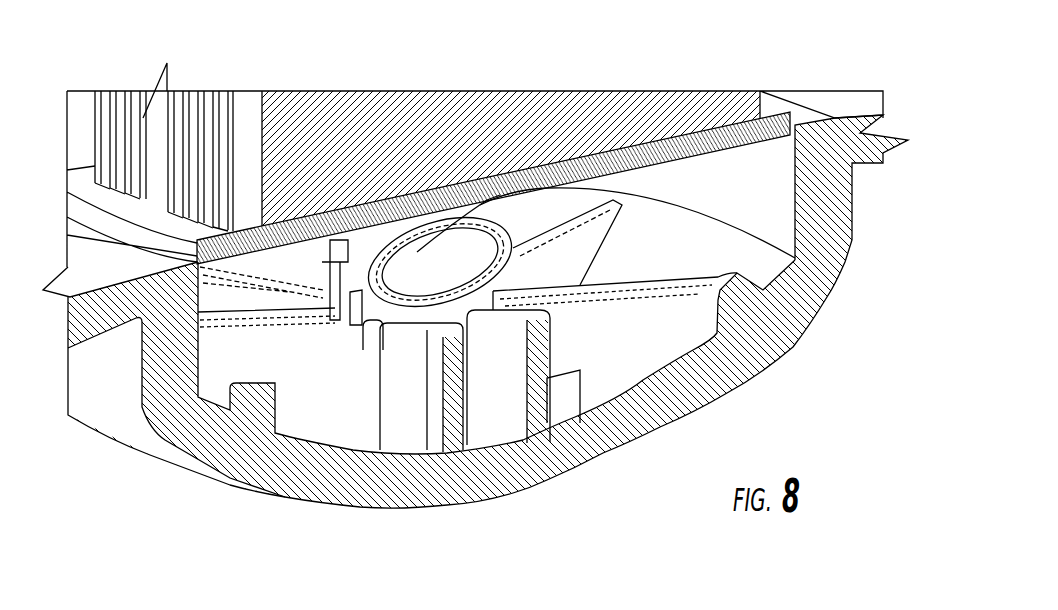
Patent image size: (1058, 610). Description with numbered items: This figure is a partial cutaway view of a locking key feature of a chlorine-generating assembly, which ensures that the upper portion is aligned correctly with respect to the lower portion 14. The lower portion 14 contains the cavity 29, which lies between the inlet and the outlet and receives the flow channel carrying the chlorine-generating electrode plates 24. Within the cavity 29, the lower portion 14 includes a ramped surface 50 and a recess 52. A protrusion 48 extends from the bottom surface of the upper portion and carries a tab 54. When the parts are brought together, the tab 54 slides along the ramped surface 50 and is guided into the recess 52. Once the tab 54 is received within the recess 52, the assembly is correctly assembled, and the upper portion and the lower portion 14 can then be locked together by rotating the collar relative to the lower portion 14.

The lower portion 14 is at (822, 233).
The chlorine-generating electrode plates 24 is at (242, 138).
The cavity 29 is at (735, 190).
The protrusion 48 is at (435, 268).
The ramped surface 50 is at (496, 247).
The recess 52 is at (355, 325).
The tab 54 is at (338, 300).